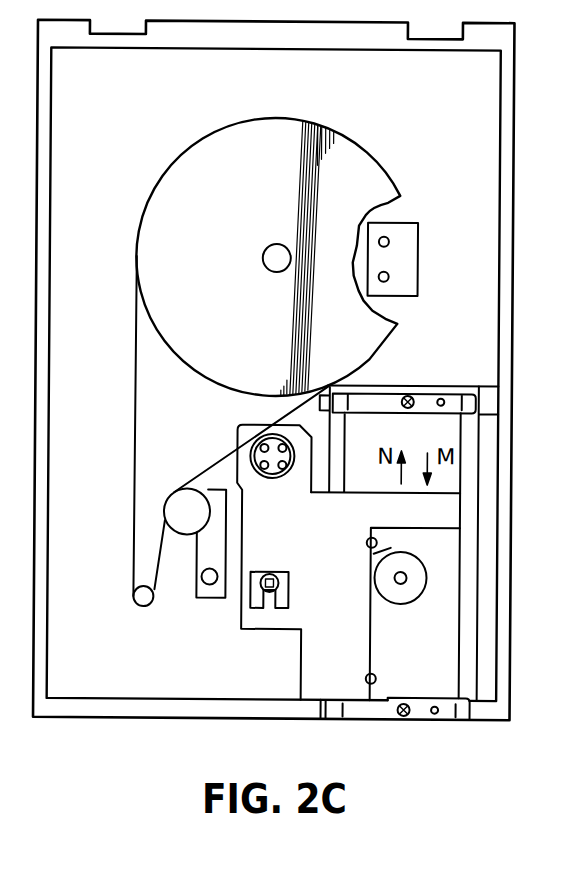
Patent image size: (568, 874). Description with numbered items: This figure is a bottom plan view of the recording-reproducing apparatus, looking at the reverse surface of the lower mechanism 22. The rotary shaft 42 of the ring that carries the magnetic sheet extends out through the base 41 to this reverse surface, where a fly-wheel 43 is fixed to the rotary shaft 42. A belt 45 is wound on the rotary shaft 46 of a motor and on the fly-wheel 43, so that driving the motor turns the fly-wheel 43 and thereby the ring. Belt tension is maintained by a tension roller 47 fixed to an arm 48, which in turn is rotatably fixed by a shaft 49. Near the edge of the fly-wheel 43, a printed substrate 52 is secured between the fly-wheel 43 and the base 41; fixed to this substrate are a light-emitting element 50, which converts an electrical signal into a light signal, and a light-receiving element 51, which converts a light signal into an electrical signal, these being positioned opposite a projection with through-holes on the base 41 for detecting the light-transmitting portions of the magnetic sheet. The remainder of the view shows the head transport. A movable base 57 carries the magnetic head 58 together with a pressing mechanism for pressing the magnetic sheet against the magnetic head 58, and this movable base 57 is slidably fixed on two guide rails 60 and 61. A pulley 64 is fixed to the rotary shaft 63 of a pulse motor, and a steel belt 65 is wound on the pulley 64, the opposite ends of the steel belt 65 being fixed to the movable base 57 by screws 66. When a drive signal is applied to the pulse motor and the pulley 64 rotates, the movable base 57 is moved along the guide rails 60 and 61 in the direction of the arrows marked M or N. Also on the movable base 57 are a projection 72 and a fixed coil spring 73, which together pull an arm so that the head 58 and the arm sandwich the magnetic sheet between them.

The lower mechanism 22 is at (162, 727).
The base 41 is at (501, 600).
The rotary shaft 42 is at (266, 248).
The fly-wheel 43 is at (353, 148).
The belt 45 is at (135, 379).
The rotary shaft of motor 46 is at (135, 597).
The tension roller 47 is at (176, 497).
The arm 48 is at (207, 545).
The shaft 49 is at (208, 585).
The light-emitting element 50 is at (377, 241).
The light-receiving element 51 is at (377, 277).
The printed substrate 52 is at (418, 257).
The movable base 57 is at (358, 690).
The magnetic head 58 is at (276, 470).
The guide rail 60 is at (345, 433).
The guide rail 61 is at (477, 434).
The rotary shaft 63 is at (396, 577).
The pulley 64 is at (405, 600).
The steel belt 65 is at (392, 547).
The screws 66 is at (379, 538).
The projection 72 is at (273, 596).
The coil spring 73 is at (273, 575).